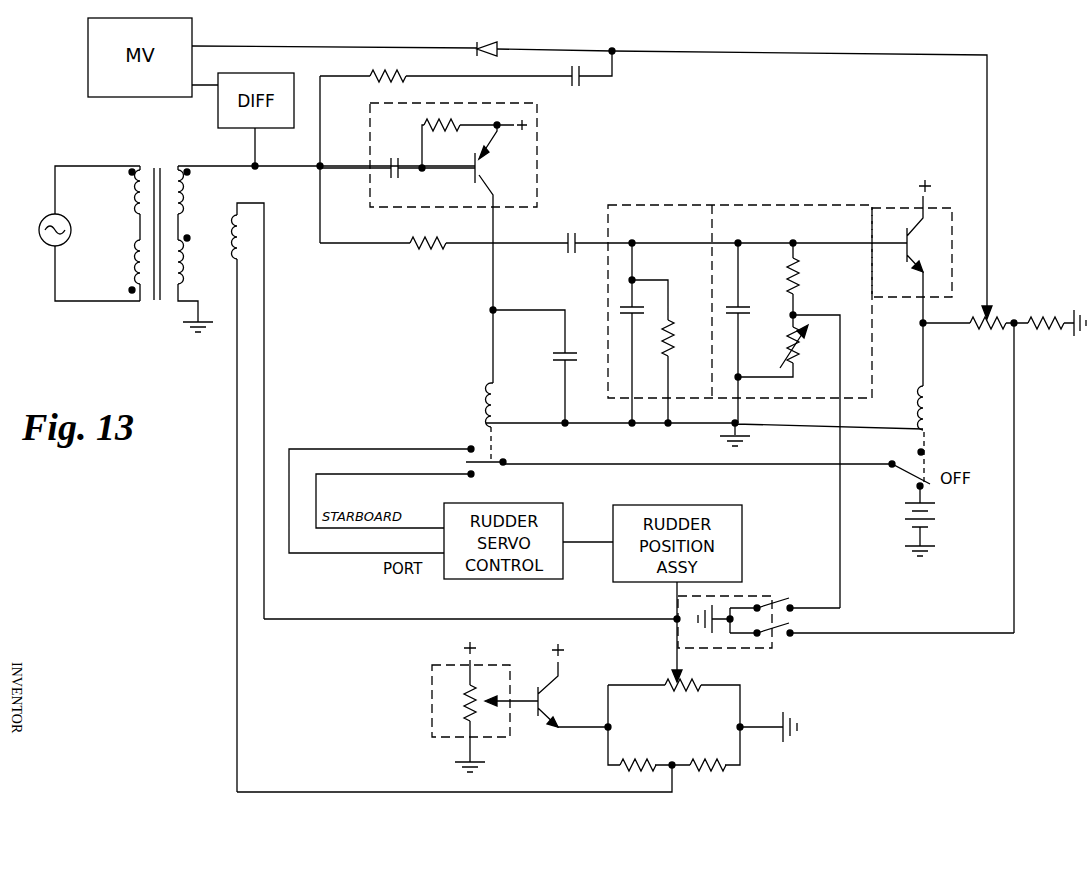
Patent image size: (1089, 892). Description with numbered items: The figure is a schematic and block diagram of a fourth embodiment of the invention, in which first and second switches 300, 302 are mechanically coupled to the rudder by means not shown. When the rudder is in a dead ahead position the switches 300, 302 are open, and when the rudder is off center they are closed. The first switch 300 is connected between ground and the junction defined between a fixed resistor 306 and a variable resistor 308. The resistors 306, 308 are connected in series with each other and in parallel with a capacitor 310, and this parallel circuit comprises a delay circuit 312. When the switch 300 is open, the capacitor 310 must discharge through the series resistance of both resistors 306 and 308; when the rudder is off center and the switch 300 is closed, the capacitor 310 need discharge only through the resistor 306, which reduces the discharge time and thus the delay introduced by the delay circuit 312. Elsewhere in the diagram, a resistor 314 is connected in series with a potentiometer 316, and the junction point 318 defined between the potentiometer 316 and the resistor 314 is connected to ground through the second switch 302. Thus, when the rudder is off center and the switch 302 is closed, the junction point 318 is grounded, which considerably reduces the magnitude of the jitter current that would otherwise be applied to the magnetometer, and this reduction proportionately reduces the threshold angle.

The first switch 300 is at (777, 603).
The second switch 302 is at (778, 638).
The fixed resistor 306 is at (798, 268).
The variable resistor 308 is at (800, 366).
The capacitor 310 is at (742, 307).
The delay circuit 312 is at (811, 208).
The resistor 314 is at (1047, 332).
The potentiometer 316 is at (1000, 316).
The junction point 318 is at (1010, 330).